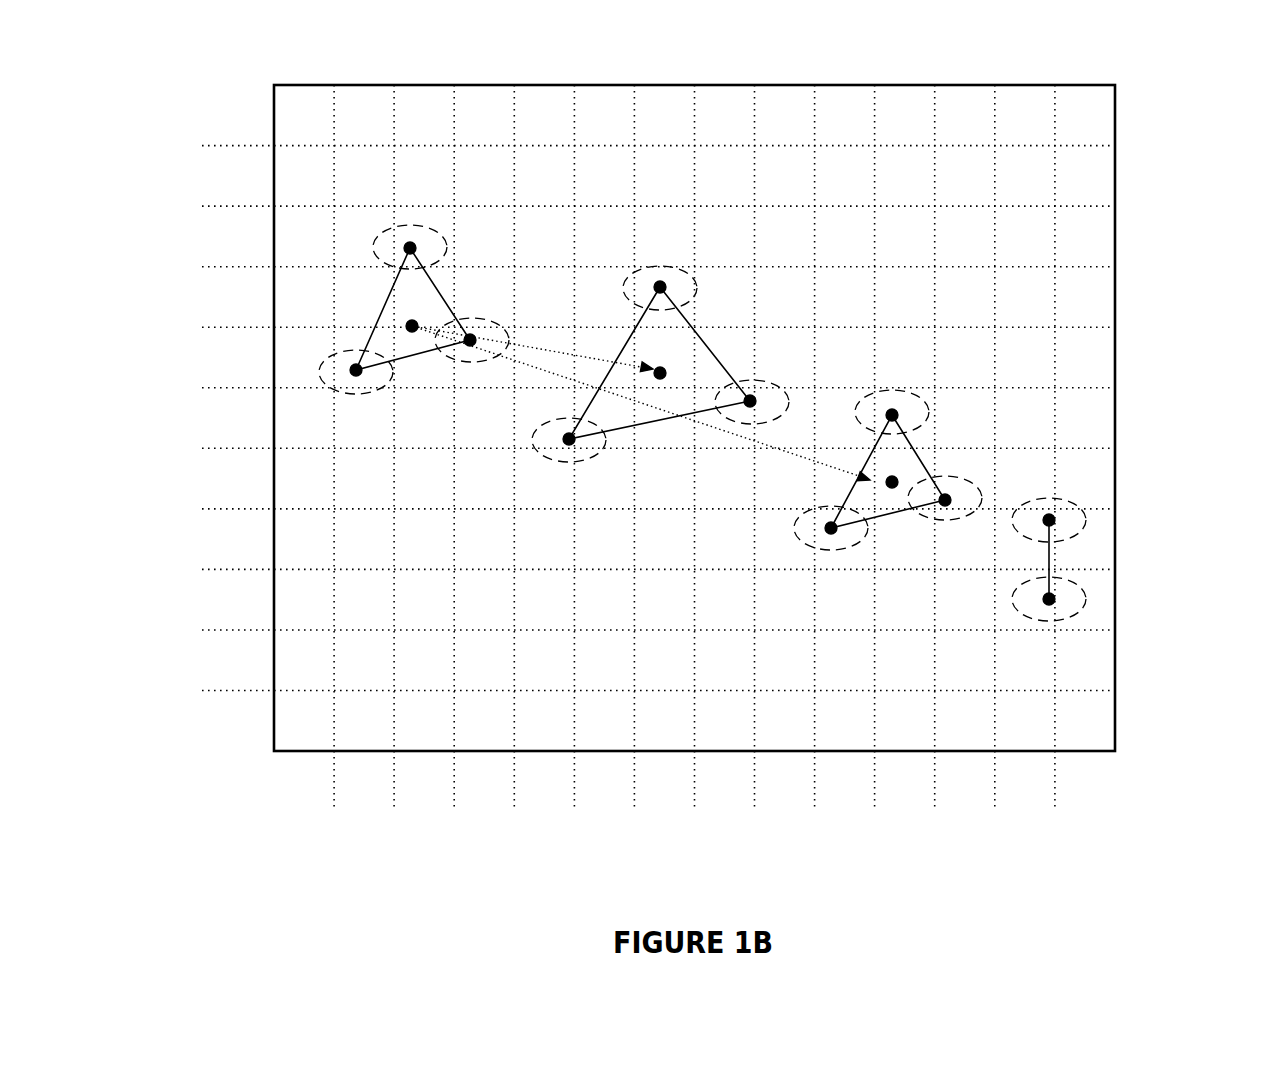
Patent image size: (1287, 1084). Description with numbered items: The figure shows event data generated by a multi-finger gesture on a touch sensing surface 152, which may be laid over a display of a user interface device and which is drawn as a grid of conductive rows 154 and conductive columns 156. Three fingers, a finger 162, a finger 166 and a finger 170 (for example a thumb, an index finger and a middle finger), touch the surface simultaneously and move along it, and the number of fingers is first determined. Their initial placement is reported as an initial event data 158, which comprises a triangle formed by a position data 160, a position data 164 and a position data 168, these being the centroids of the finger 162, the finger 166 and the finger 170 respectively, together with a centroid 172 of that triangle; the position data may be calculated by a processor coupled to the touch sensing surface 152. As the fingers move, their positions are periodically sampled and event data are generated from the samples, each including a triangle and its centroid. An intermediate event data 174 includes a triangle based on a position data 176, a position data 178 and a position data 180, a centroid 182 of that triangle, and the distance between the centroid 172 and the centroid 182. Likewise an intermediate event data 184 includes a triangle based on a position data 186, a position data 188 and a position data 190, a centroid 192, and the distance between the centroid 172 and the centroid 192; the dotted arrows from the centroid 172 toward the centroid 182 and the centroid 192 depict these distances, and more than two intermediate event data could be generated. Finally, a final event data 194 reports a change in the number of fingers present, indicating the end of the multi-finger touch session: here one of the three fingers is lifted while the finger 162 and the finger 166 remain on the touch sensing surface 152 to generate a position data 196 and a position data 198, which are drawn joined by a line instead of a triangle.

The touch sensing surface 152 is at (1115, 722).
The conductive rows 154 is at (214, 85).
The conductive columns 156 is at (280, 810).
The initial event data 158 is at (412, 303).
The position data 160 is at (367, 380).
The finger 162 is at (342, 390).
The position data 164 is at (410, 248).
The finger 166 is at (448, 220).
The position data 168 is at (463, 325).
The finger 170 is at (478, 352).
The centroid 172 is at (412, 326).
The intermediate event data 174 is at (693, 363).
The position data 176 is at (578, 462).
The position data 178 is at (668, 262).
The position data 180 is at (750, 385).
The centroid 182 is at (660, 373).
The intermediate event data 184 is at (1017, 328).
The position data 186 is at (837, 553).
The position data 188 is at (885, 402).
The position data 190 is at (962, 490).
The centroid 192 is at (988, 388).
The final event data 194 is at (1047, 560).
The position data 196 is at (1049, 599).
The position data 198 is at (1086, 518).